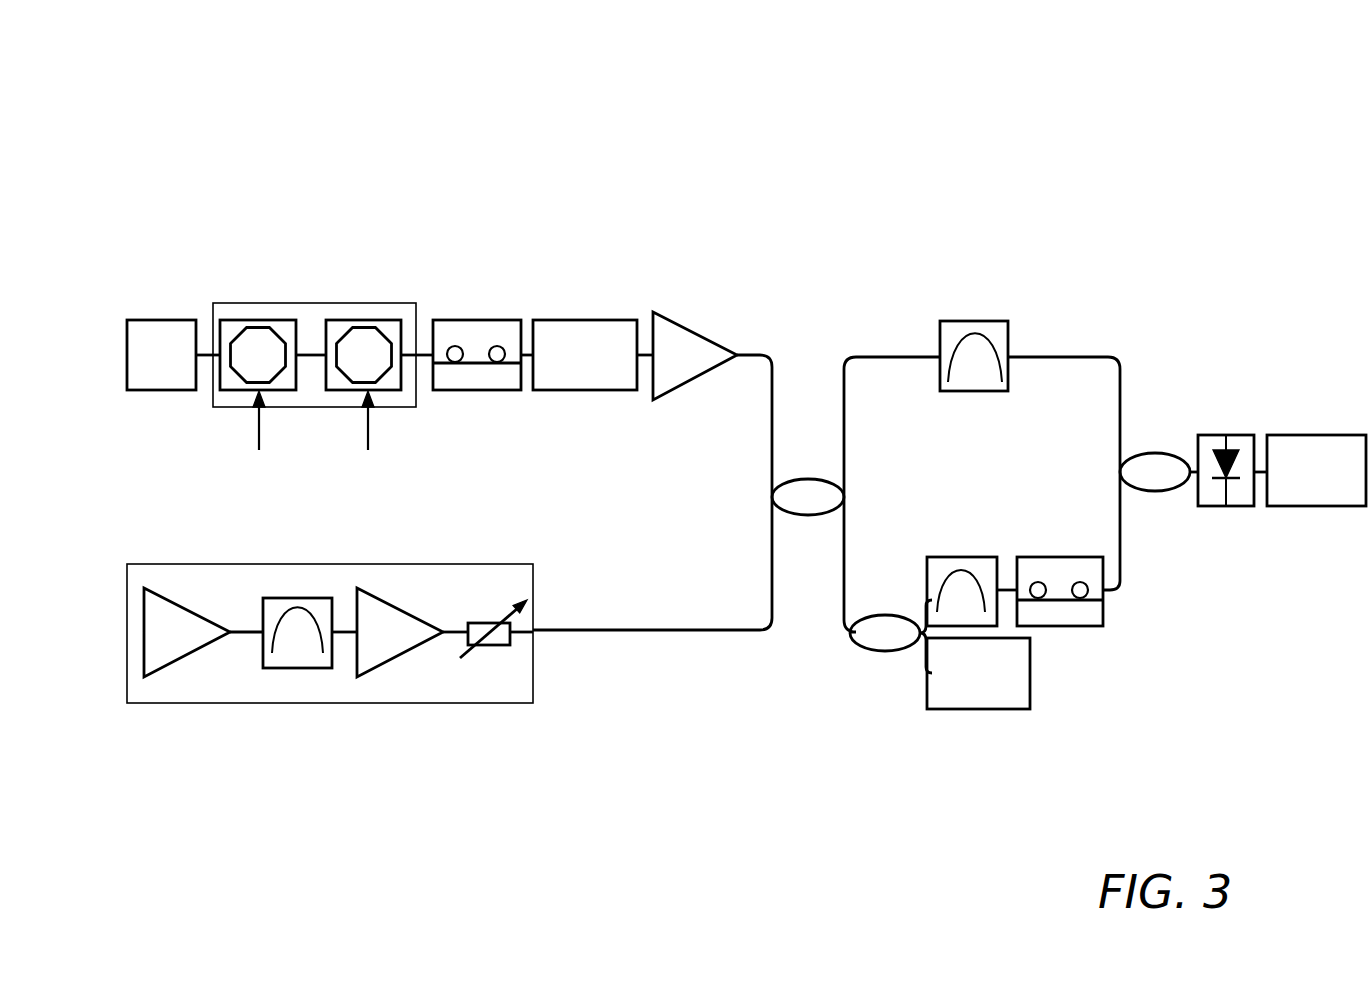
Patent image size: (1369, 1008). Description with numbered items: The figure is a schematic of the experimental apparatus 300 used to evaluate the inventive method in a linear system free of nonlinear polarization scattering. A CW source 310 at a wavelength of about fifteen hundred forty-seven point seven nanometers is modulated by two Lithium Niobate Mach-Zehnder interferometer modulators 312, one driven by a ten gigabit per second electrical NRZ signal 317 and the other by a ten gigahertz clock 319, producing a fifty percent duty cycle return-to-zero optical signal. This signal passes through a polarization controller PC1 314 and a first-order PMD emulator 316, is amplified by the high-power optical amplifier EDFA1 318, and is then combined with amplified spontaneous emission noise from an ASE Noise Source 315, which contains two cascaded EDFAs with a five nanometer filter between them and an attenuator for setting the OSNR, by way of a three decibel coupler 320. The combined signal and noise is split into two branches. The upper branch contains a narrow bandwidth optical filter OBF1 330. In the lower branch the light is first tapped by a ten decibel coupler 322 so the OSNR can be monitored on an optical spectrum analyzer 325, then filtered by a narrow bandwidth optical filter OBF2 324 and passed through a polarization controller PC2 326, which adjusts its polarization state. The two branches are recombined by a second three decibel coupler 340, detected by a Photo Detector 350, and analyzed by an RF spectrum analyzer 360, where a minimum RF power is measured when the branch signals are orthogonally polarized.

The experimental setup 300 is at (1198, 76).
The CW source 310 is at (157, 391).
The Mach-Zehnder interferometer modulators 312 is at (314, 377).
The 10-Gb/s electrical NRZ signal 317 is at (258, 418).
The 10 GHz clock 319 is at (370, 418).
The polarization controller PC1 314 is at (476, 320).
The first-order PMD emulator 316 is at (596, 320).
The optical amplifier EDFA1 318 is at (668, 312).
The 3 dB coupler 320 is at (843, 497).
The ASE Noise Source 315 is at (330, 703).
The narrow bandwidth optical filter OBF1 330 is at (972, 321).
The 3 dB coupler 340 is at (1121, 468).
The Photo Detector 350 is at (1228, 435).
The RF spectrum analyzer 360 is at (1307, 506).
The 10 dB coupler 322 is at (876, 652).
The narrow bandwidth optical filter OBF2 324 is at (965, 557).
The polarization controller PC2 326 is at (1060, 557).
The optical spectrum analyzer 325 is at (980, 709).